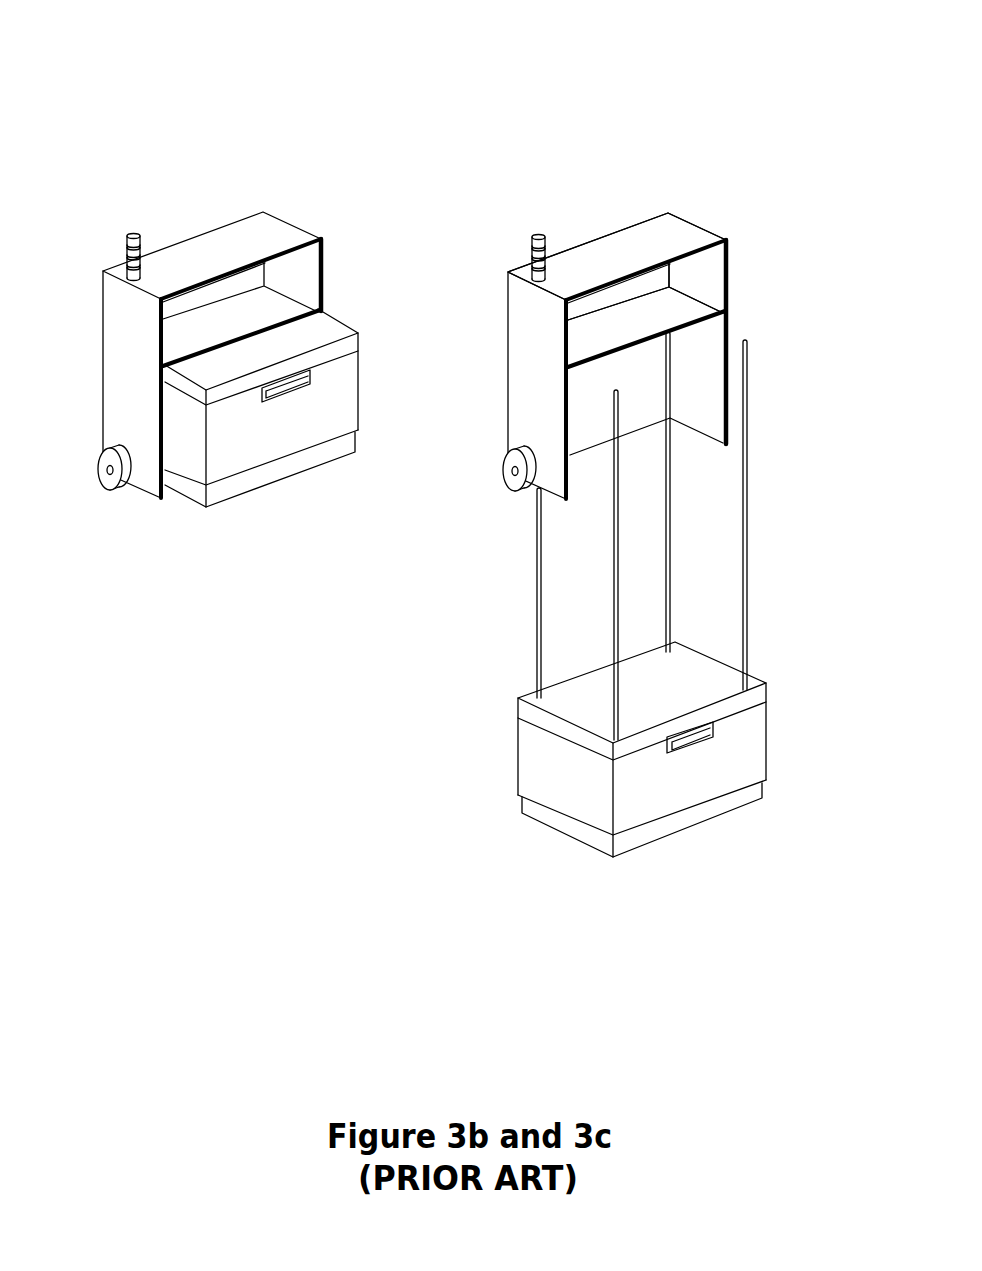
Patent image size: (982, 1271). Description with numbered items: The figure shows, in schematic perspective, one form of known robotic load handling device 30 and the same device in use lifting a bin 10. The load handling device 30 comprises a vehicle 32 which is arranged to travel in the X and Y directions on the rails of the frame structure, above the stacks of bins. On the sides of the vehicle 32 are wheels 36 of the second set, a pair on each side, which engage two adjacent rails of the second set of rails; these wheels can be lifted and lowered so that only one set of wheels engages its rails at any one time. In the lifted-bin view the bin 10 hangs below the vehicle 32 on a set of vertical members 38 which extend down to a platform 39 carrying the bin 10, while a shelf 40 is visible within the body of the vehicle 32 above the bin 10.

In FIG. 3B, the container 10 is at (250, 432).
In FIG. 3C, the container 10 is at (707, 783).
In FIG. 3B, the load handling device 30 is at (282, 158).
In FIG. 3C, the load handling device 30 is at (676, 157).
In FIG. 3C, the vehicle 32 is at (680, 238).
In FIG. 3B, the second set of wheels 36 is at (116, 487).
In FIG. 3C, the second set of wheels 36 is at (512, 484).
In FIG. 3C, the guide posts 38 is at (537, 642).
In FIG. 3C, the platform 39 is at (707, 678).
In FIG. 3C, the shelf 40 is at (607, 380).